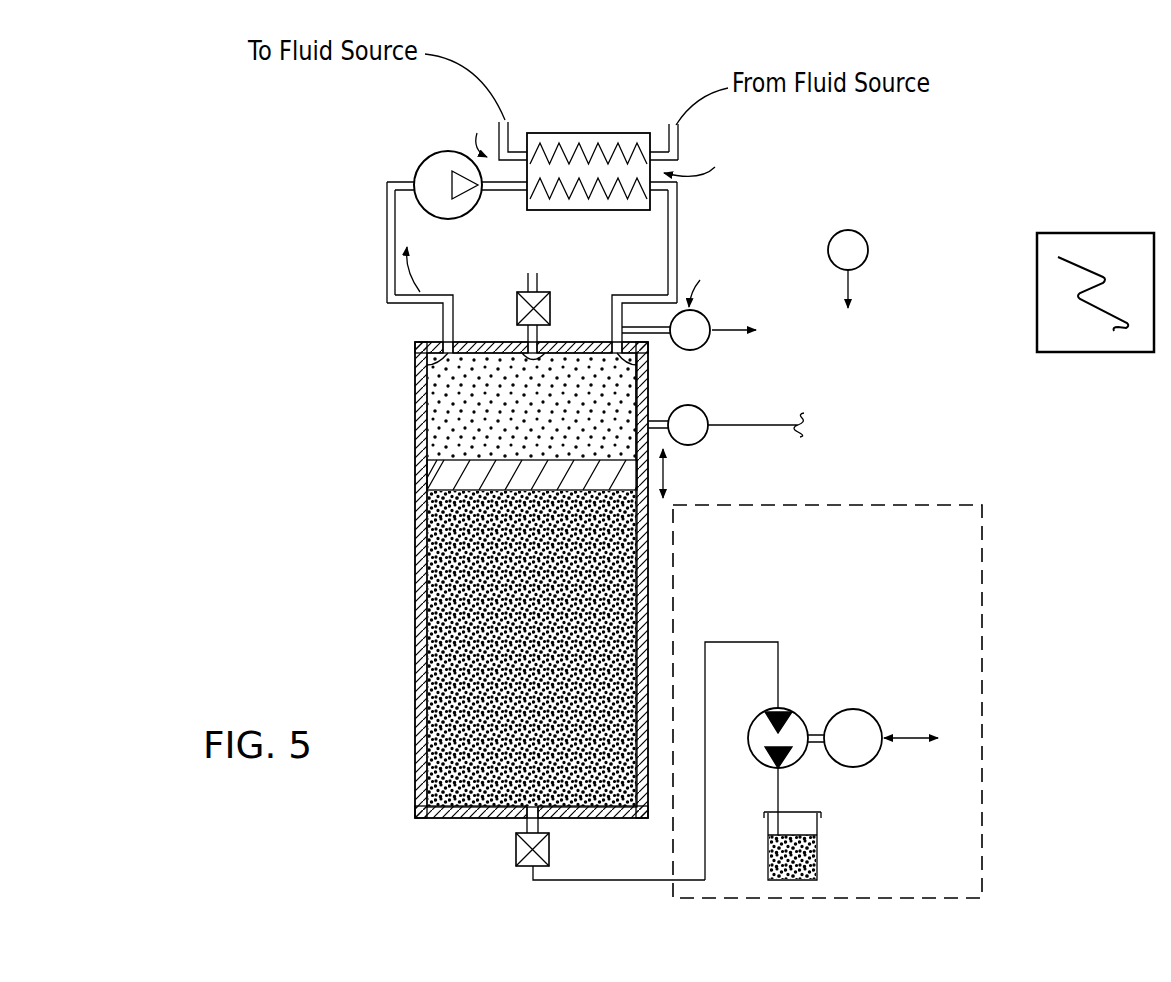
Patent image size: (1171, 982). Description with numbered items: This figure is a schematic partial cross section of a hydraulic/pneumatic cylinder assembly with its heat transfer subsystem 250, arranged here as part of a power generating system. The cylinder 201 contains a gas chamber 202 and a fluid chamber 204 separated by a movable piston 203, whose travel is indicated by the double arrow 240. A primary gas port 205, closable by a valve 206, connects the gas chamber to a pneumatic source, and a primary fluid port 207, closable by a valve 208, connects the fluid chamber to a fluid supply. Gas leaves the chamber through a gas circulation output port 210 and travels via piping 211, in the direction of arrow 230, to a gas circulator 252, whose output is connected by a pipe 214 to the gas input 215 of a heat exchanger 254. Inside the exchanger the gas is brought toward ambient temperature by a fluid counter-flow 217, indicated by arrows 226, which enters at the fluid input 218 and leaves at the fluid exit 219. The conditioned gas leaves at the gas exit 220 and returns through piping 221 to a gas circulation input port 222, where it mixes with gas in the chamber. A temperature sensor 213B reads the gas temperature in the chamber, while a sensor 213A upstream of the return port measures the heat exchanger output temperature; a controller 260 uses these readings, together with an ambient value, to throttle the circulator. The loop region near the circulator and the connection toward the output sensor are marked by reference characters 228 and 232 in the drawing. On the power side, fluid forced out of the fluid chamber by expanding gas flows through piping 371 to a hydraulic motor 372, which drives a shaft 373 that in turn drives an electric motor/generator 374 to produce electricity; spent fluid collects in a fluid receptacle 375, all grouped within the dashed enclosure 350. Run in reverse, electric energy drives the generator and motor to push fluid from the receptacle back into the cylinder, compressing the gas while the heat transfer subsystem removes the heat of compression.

The heat transfer subsystem 250 is at (217, 189).
The cylinder 201 is at (529, 580).
The gas chamber 202 is at (455, 428).
The piston 203 is at (430, 474).
The fluid chamber 204 is at (450, 652).
The primary gas port 205 is at (528, 335).
The valve 206 is at (550, 305).
The primary fluid port 207 is at (527, 828).
The valve 208 is at (550, 851).
The gas circulation output port 210 is at (413, 374).
The piping 211 is at (387, 246).
The temperature sensor 213A is at (705, 343).
The temperature sensor 213B is at (703, 437).
The pipe 214 is at (497, 172).
The gas input 215 is at (527, 192).
The fluid counter-flow 217 is at (680, 136).
The fluid input 218 is at (650, 148).
The fluid exit 219 is at (527, 148).
The gas exit 220 is at (650, 200).
The piping 221 is at (678, 240).
The gas circulation input port 222 is at (653, 375).
The arrows 226 is at (607, 144).
The fluid loop 228 is at (367, 286).
The arrow 230 is at (413, 272).
The sensor connection 232 is at (703, 283).
The double arrow 240 is at (668, 474).
The gas circulator 252 is at (420, 167).
The heat exchanger 254 is at (592, 133).
The controller 260 is at (1093, 233).
The power generation unit 350 is at (983, 582).
The piping 371 is at (740, 641).
The hydraulic motor 372 is at (793, 714).
The shaft 373 is at (815, 735).
The electric motor/generator 374 is at (875, 722).
The fluid receptacle 375 is at (812, 862).